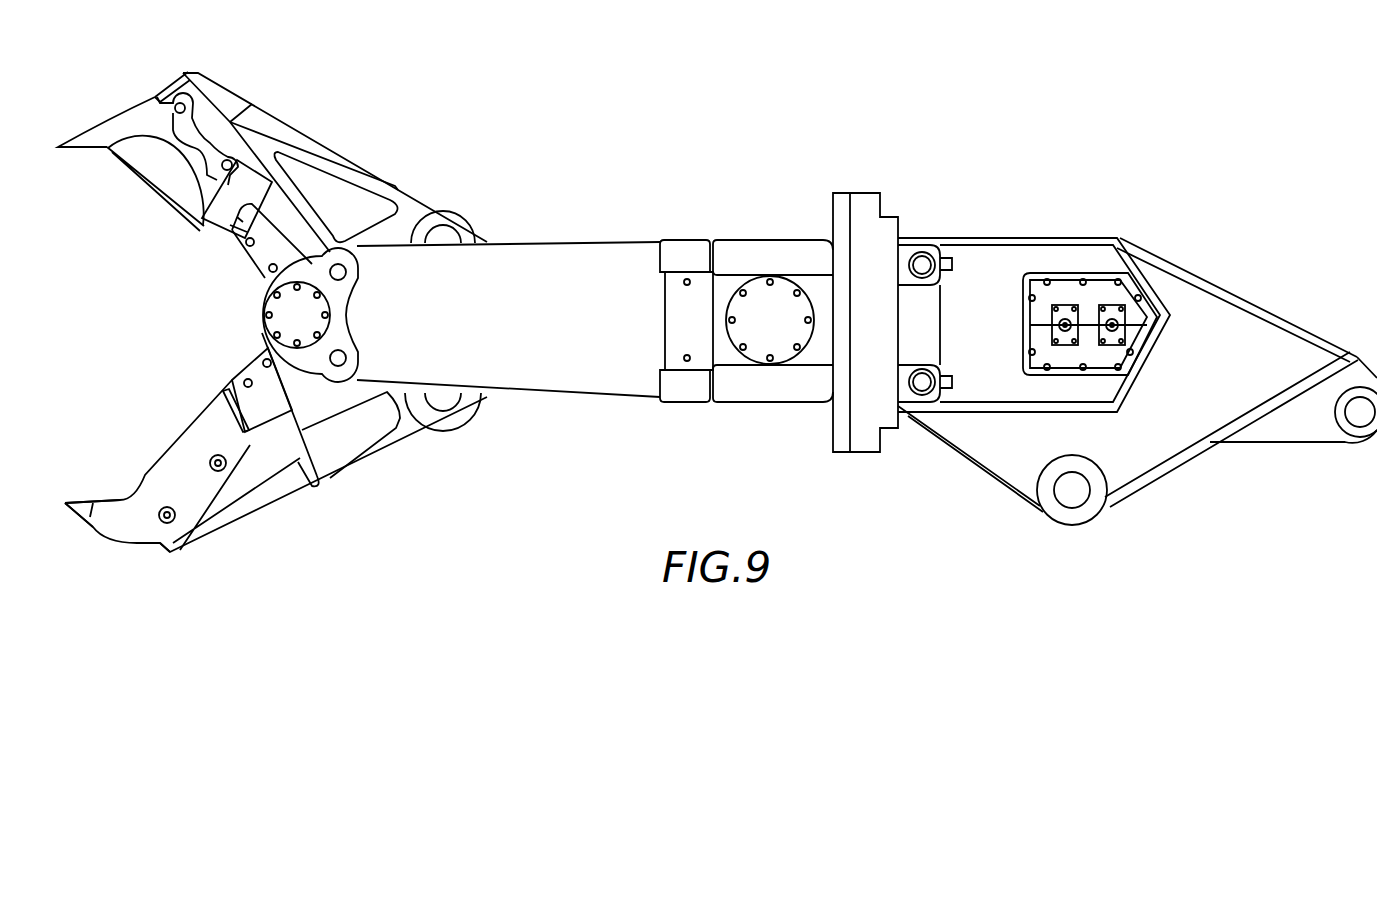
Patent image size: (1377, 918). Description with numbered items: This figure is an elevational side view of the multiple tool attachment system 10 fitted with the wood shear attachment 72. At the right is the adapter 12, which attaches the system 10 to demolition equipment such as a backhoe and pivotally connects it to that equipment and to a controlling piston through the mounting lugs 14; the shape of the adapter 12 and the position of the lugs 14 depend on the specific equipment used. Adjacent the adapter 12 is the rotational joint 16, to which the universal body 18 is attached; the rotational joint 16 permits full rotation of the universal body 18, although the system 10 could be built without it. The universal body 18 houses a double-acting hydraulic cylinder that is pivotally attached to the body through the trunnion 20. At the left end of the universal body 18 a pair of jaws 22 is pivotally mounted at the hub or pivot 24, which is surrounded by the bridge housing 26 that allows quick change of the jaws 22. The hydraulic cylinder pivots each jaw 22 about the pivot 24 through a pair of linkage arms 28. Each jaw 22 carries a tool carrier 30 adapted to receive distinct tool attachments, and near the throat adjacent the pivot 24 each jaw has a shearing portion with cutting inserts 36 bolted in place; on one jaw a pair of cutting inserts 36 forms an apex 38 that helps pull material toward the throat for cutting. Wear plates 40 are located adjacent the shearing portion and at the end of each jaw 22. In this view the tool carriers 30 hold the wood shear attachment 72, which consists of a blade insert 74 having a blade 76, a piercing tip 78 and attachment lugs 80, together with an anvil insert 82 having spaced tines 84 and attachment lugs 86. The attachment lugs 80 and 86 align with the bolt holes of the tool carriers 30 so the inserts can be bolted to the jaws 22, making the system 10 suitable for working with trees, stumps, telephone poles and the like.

The multiple tool attachment system 10 is at (667, 440).
The adapter 12 is at (1189, 390).
The mounting lugs 14 is at (1066, 485).
The rotational joint 16 is at (880, 330).
The universal body 18 is at (527, 332).
The trunnion 20 is at (780, 330).
The jaws 22 is at (312, 125).
The pivot 24 is at (310, 326).
The bridge housing 26 is at (352, 300).
The linkage arms 28 is at (487, 242).
The tool carrier 30 is at (224, 121).
The cutting inserts 36 is at (258, 347).
The apex 38 is at (258, 275).
The wear plates 40 is at (168, 78).
The wood shear attachment 72 is at (146, 259).
The blade insert 74 is at (208, 225).
The blade 76 is at (147, 165).
The piercing tip 78 is at (66, 147).
The attachment lugs 80 is at (222, 170).
The anvil insert 82 is at (104, 530).
The tines 84 is at (84, 500).
The attachment lugs 86 is at (170, 507).